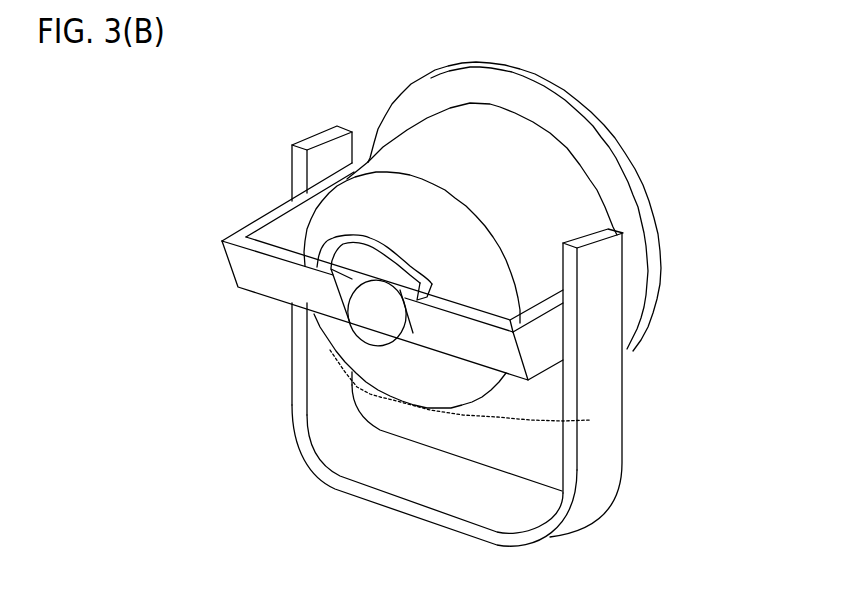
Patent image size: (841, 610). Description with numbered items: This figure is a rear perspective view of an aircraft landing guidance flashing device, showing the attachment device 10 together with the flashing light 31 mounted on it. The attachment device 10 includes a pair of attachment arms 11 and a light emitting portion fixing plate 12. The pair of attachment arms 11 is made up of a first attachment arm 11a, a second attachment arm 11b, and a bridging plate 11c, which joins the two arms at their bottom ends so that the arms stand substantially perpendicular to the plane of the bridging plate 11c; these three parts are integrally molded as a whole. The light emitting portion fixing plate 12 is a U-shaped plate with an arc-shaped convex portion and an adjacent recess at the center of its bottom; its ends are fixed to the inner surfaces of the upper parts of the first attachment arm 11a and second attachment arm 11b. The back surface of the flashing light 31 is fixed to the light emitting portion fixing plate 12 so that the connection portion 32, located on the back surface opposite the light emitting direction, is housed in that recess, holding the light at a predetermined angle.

The attachment device 10 is at (762, 330).
The pair of attachment arms 11 is at (710, 380).
The first attachment arm 11a is at (600, 395).
The second attachment arm 11b is at (590, 420).
The bridging plate 11c is at (452, 500).
The light emitting portion fixing plate 12 is at (540, 352).
The flashing light 31 is at (577, 205).
The connection portion 32 is at (363, 316).